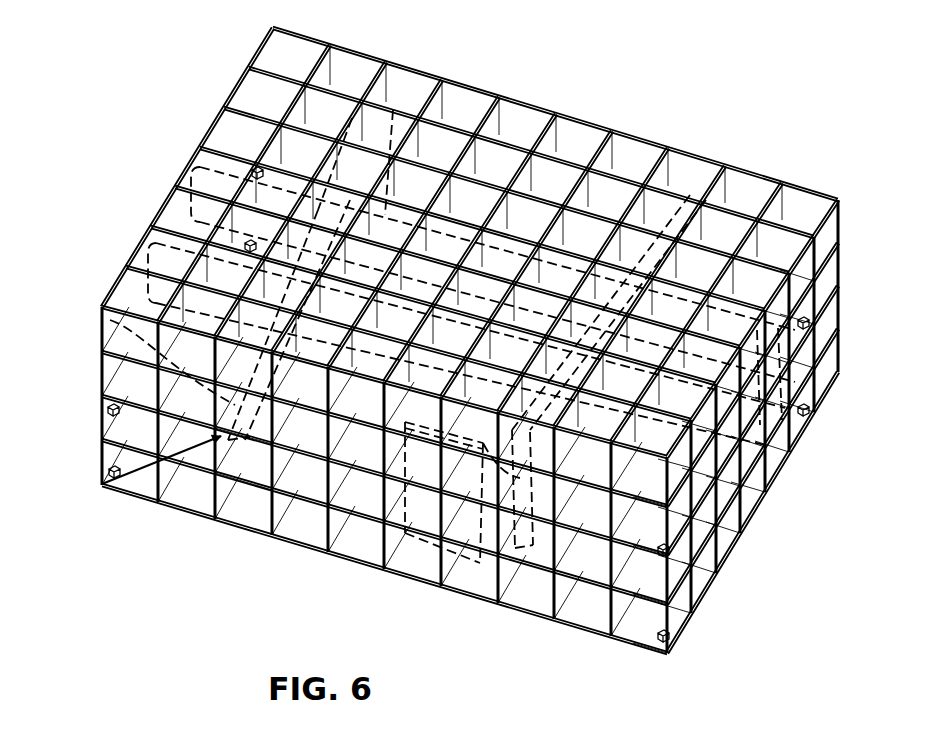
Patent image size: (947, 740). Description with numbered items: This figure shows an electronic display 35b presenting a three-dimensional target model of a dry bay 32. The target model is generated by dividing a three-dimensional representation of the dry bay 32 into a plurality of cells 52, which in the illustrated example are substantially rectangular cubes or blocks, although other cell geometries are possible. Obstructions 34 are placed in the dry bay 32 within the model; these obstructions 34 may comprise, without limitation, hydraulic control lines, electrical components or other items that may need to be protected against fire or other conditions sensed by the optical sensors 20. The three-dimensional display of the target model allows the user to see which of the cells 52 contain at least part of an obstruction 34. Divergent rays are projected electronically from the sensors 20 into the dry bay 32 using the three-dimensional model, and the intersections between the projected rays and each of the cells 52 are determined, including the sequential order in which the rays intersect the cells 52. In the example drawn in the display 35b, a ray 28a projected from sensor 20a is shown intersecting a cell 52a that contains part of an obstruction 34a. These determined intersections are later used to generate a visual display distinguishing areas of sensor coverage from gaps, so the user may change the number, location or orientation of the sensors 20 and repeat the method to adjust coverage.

The cells 52 is at (273, 157).
The dry bay 32 is at (165, 195).
The electronic display 35b is at (705, 128).
The optical sensors 20 is at (108, 410).
The sensor 20a is at (108, 473).
The ray 28a is at (137, 462).
The cell 52a is at (260, 454).
The obstructions 34 is at (510, 550).
The obstruction 34a is at (110, 320).